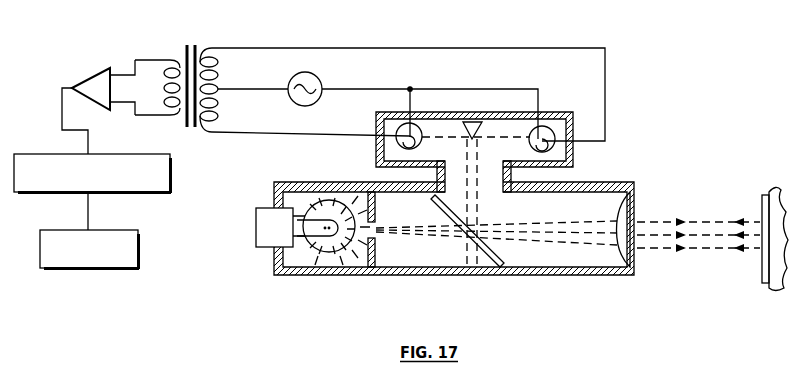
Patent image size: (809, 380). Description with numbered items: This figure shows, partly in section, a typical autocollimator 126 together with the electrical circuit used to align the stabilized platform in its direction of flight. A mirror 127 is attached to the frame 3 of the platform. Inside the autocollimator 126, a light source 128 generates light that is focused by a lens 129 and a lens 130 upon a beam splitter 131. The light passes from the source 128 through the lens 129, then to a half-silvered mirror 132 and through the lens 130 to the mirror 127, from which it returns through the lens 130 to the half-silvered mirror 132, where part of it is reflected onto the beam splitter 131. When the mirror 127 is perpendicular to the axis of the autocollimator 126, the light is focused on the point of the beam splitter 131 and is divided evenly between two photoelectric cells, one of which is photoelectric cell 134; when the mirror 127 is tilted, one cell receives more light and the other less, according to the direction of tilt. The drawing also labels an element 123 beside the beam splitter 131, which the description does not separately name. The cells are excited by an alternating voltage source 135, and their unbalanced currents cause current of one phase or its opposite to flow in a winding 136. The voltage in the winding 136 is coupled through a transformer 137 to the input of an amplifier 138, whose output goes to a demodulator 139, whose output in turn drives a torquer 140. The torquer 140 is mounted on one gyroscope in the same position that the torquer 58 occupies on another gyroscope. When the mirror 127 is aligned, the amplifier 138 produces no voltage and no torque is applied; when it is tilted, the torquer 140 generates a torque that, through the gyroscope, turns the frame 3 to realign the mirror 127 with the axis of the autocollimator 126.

The frame 3 is at (776, 194).
The torquer 58 is at (233, 379).
The pickoff coil 123 is at (417, 142).
The autocollimator 126 is at (584, 277).
The mirror 127 is at (760, 272).
The light source 128 is at (323, 249).
The lens 129 is at (380, 233).
The lens 130 is at (628, 216).
The beam splitter 131 is at (474, 123).
The half-silvered mirror 132 is at (502, 270).
The photoelectric cell 134 is at (528, 144).
The alternating voltage source 135 is at (317, 78).
The winding 136 is at (211, 61).
The transformer 137 is at (187, 45).
The amplifier 138 is at (96, 75).
The demodulator 139 is at (163, 188).
The torquer 140 is at (137, 263).